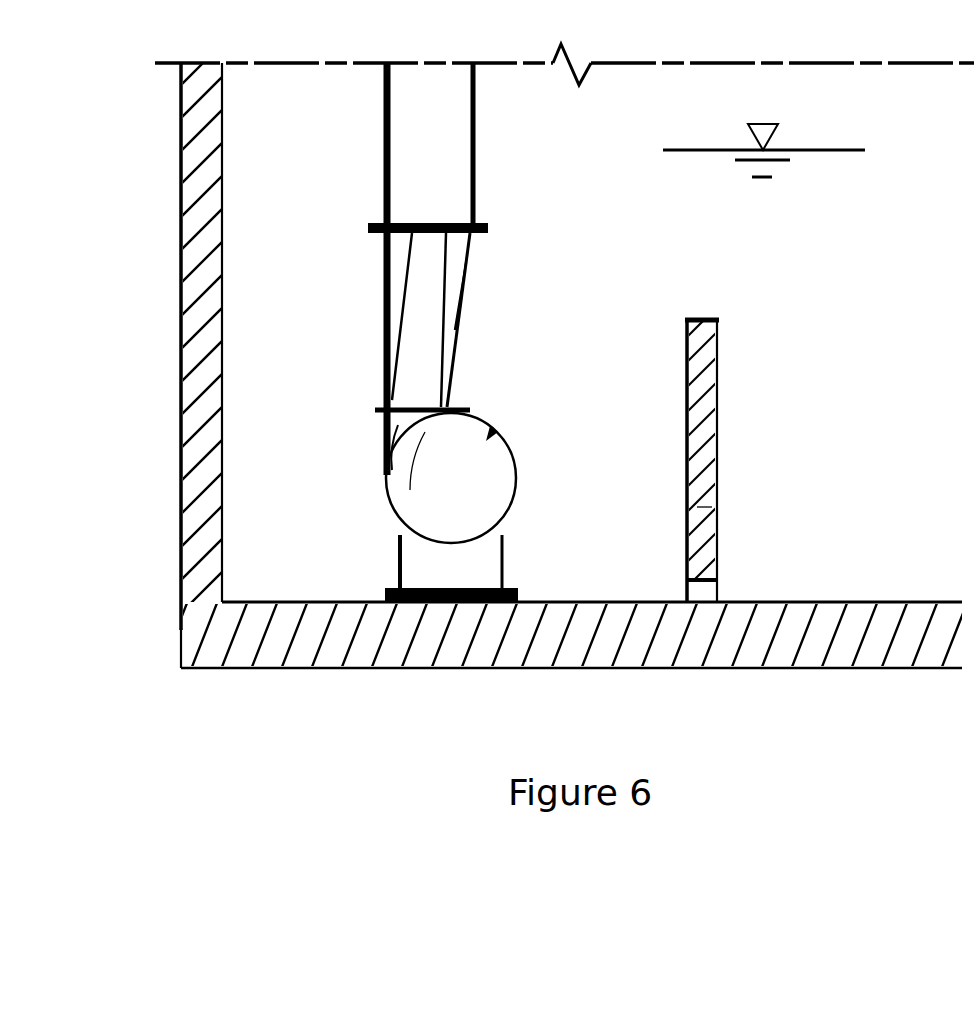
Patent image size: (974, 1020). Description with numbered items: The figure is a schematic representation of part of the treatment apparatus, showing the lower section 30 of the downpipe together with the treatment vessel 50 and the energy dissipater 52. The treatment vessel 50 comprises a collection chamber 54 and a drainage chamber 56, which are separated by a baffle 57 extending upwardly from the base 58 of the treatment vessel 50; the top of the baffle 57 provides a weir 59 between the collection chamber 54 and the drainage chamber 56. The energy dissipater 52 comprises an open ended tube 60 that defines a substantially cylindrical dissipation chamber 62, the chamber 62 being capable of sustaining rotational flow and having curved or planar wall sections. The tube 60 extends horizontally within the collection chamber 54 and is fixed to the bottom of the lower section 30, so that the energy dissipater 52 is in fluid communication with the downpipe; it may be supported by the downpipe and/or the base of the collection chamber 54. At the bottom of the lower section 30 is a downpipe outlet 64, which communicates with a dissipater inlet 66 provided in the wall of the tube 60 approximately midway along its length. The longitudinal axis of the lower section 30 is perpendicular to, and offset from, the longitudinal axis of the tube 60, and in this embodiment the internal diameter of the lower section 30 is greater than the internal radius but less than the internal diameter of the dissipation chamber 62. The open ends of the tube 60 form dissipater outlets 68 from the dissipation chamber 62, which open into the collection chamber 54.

The lower section 30 is at (433, 157).
The treatment vessel 50 is at (198, 200).
The energy dissipater 52 is at (487, 437).
The collection chamber 54 is at (626, 460).
The drainage chamber 56 is at (882, 465).
The baffle 57 is at (697, 507).
The base 58 is at (860, 608).
The weir 59 is at (703, 318).
The open ended tube 60 is at (518, 495).
The dissipation chamber 62 is at (470, 497).
The downpipe outlet 64 is at (402, 434).
The dissipater inlet 66 is at (425, 432).
The dissipater outlets 68 is at (470, 538).